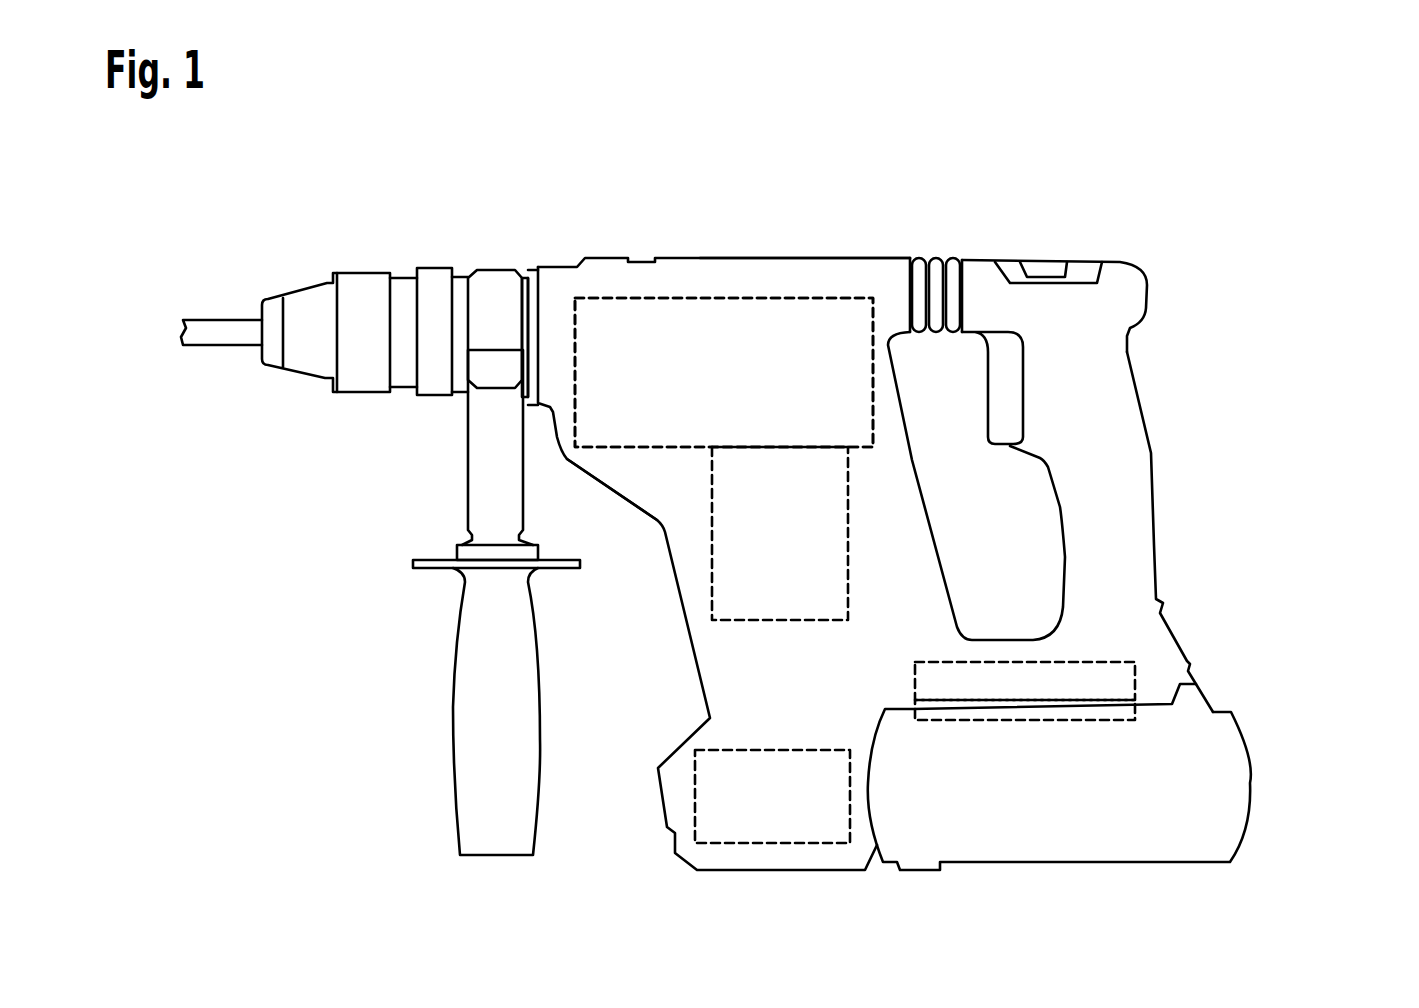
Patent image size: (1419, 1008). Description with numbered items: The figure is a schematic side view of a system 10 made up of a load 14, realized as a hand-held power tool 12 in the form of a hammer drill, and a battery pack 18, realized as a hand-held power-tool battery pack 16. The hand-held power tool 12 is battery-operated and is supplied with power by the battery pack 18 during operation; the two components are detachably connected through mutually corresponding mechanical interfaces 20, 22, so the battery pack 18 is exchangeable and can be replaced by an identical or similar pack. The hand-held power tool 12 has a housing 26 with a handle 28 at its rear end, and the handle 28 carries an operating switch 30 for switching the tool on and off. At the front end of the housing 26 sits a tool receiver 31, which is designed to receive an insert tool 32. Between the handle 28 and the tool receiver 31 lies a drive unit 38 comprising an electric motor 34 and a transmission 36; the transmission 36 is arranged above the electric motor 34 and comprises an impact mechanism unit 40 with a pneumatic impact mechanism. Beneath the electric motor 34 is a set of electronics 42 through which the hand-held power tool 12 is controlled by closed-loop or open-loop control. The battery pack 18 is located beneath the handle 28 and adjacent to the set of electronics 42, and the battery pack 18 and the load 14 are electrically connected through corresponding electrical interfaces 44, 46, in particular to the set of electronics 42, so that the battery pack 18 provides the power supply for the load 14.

The system 10 is at (837, 196).
The hand-held power tool 12 is at (924, 223).
The load 14 is at (887, 231).
The hand-held power-tool battery pack 16 is at (1131, 777).
The battery pack 18 is at (1266, 776).
The mechanical interface 20 is at (1110, 642).
The mechanical interface 22 is at (1132, 717).
The housing 26 is at (802, 251).
The handle 28 is at (1122, 453).
The operating switch 30 is at (1007, 382).
The tool receiver 31 is at (304, 265).
The insert tool 32 is at (214, 330).
The electric motor 34 is at (710, 585).
The transmission 36 is at (598, 298).
The drive unit 38 is at (696, 472).
The impact mechanism unit 40 is at (746, 360).
The set of electronics 42 is at (694, 810).
The electrical interface 44 is at (1102, 662).
The electrical interface 46 is at (1087, 722).